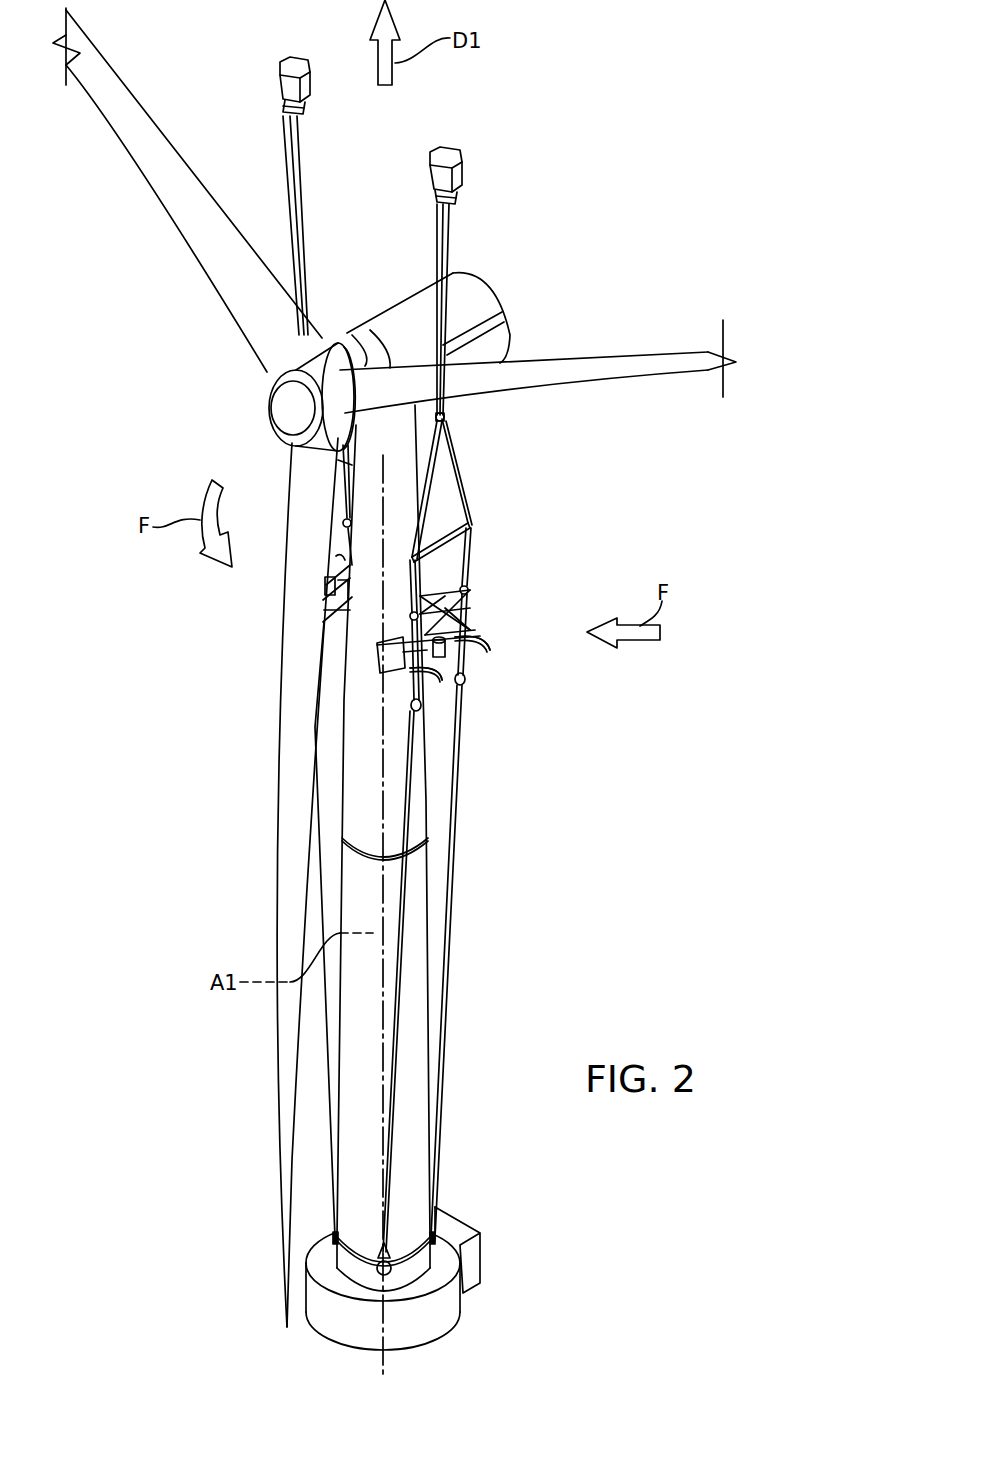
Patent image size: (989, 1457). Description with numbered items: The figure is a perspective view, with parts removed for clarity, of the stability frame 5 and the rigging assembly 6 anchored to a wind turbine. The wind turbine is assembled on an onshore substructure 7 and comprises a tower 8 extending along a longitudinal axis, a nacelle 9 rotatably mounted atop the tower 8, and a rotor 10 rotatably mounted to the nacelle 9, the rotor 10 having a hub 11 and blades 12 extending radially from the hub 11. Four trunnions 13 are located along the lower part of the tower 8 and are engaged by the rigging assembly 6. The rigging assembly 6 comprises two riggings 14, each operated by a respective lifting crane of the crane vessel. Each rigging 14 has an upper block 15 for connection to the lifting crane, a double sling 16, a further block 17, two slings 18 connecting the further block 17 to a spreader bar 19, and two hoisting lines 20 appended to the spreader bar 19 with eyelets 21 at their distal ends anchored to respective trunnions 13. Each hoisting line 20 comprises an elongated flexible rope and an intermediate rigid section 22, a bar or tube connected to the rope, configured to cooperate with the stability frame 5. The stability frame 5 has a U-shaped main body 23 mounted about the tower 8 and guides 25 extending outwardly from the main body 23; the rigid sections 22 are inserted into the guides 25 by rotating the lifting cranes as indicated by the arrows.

The stability frame 5 is at (497, 634).
The rigging assembly 6 is at (605, 100).
The onshore substructure 7 is at (445, 1308).
The tower 8 is at (427, 818).
The nacelle 9 is at (474, 292).
The rotor 10 is at (236, 433).
The hub 11 is at (275, 398).
The blades 12 is at (180, 222).
The trunnions 13 is at (438, 1240).
The riggings 14 is at (250, 60).
The upper block 15 is at (296, 58).
The double sling 16 is at (304, 236).
The further block 17 is at (455, 420).
The slings 18 is at (465, 480).
The spreader bar 19 is at (445, 545).
The hoisting lines 20 is at (466, 743).
The eyelets 21 is at (482, 1253).
The intermediate rigid section 22 is at (452, 612).
The main body 23 is at (468, 590).
The guides 25 is at (438, 686).